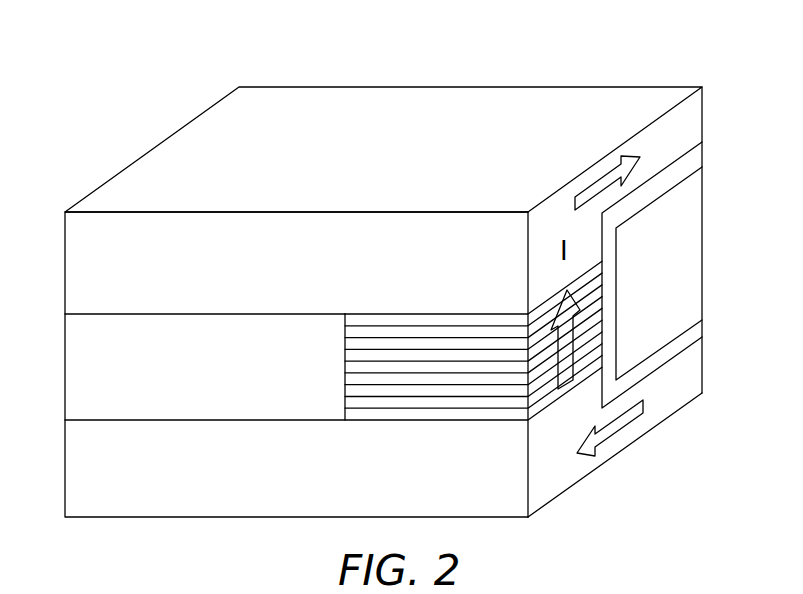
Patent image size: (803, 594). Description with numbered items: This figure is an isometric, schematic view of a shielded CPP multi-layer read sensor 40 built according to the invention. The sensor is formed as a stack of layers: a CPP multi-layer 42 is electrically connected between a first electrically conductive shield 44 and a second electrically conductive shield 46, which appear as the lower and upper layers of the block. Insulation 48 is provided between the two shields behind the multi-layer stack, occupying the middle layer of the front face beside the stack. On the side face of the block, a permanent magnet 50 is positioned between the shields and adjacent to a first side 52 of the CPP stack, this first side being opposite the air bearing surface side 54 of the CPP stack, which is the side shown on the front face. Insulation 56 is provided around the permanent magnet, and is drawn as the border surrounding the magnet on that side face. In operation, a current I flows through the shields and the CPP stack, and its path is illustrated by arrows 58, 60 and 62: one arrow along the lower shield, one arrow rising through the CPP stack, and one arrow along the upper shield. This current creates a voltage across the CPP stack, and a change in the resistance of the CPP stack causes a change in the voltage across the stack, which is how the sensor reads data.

The shielded CPP multi-layer read sensor 40 is at (650, 70).
The CPP multi-layer 42 is at (337, 333).
The first electrically conductive shield 44 is at (73, 472).
The second electrically conductive shield 46 is at (83, 270).
The insulation 48 is at (80, 377).
The permanent magnet 50 is at (693, 233).
The first side of the CPP stack 52 is at (597, 327).
The air bearing surface side of the CPP stack 54 is at (433, 388).
The insulation around the permanent magnet 56 is at (693, 162).
The arrow 58 is at (612, 427).
The arrow 60 is at (555, 344).
The arrow 62 is at (612, 181).